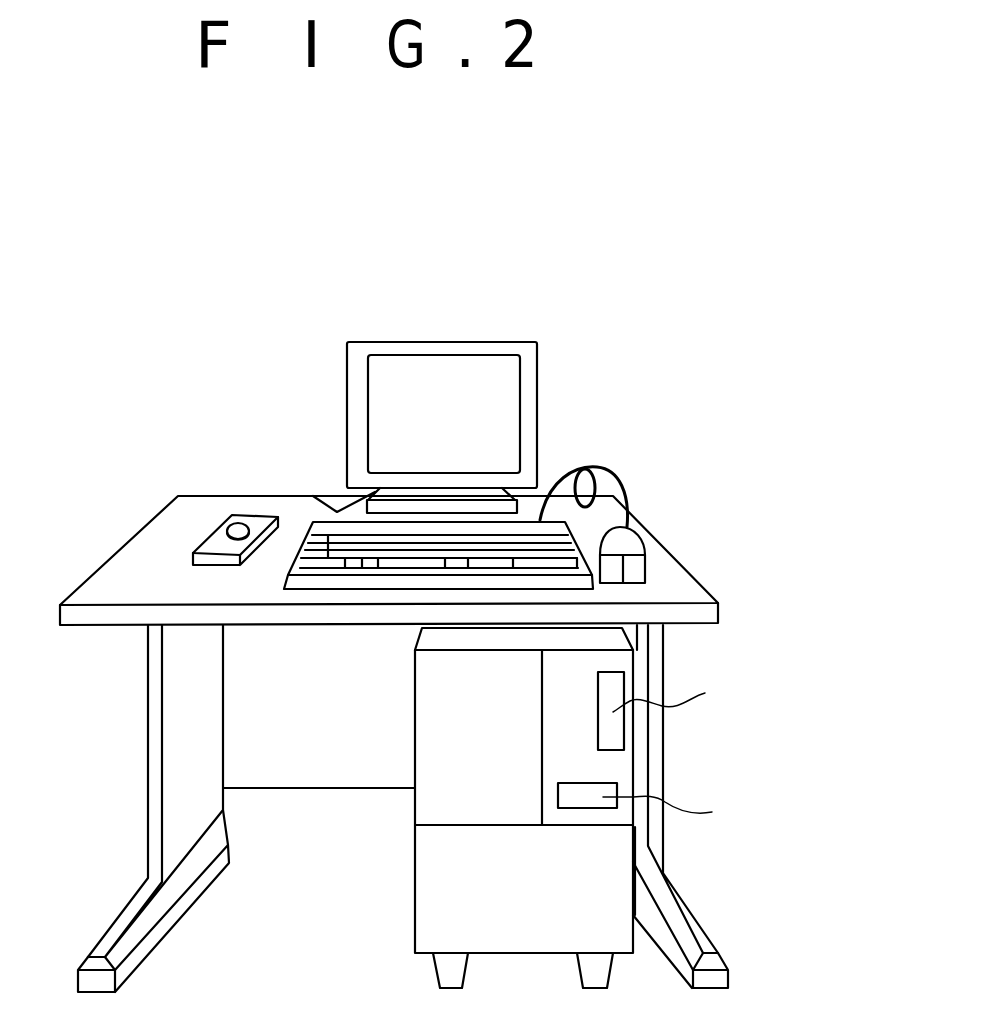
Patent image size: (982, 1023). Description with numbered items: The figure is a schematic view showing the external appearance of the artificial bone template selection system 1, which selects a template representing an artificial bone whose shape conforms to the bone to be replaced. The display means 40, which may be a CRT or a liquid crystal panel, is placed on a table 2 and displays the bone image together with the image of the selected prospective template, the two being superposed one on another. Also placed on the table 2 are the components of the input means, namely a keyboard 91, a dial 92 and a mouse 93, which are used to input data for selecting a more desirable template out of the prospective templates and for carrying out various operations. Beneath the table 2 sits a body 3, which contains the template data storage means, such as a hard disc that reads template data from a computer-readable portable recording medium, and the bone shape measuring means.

The artificial bone template selection system 1 is at (245, 230).
The table 2 is at (683, 596).
The body 3 is at (430, 912).
The display means 40 is at (495, 370).
The keyboard 91 is at (287, 568).
The dial 92 is at (215, 543).
The mouse 93 is at (628, 547).